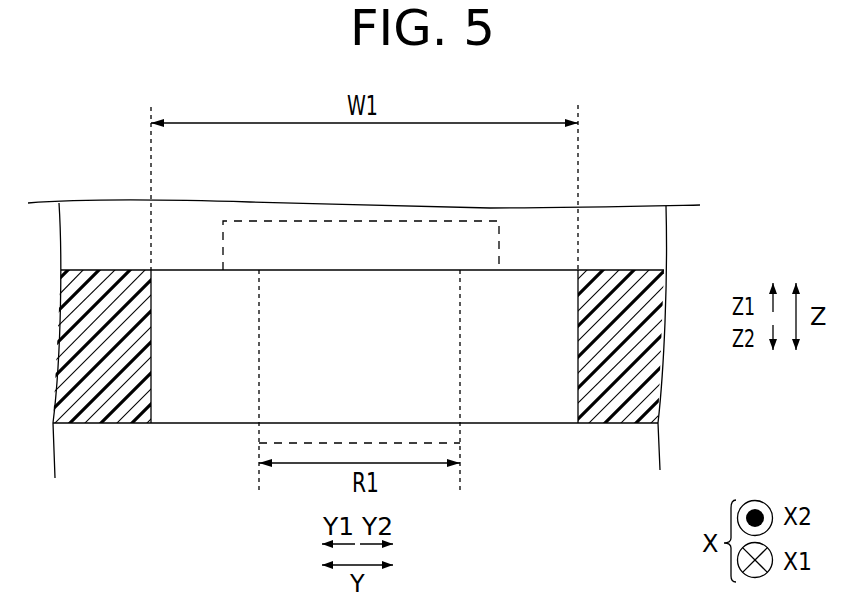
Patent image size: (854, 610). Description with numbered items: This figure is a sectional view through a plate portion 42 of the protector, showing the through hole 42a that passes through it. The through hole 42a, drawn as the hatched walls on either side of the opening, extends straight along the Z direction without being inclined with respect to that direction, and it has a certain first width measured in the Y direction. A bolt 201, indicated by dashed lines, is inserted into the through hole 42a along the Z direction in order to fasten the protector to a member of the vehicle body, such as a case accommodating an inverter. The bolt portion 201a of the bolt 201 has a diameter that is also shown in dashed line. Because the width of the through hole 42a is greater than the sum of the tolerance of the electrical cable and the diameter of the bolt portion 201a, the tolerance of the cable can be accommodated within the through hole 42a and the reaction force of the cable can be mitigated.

The plate portion 42 is at (611, 398).
The through hole 42a is at (152, 383).
The bolt 201 is at (481, 212).
The bolt portion 201a is at (470, 385).